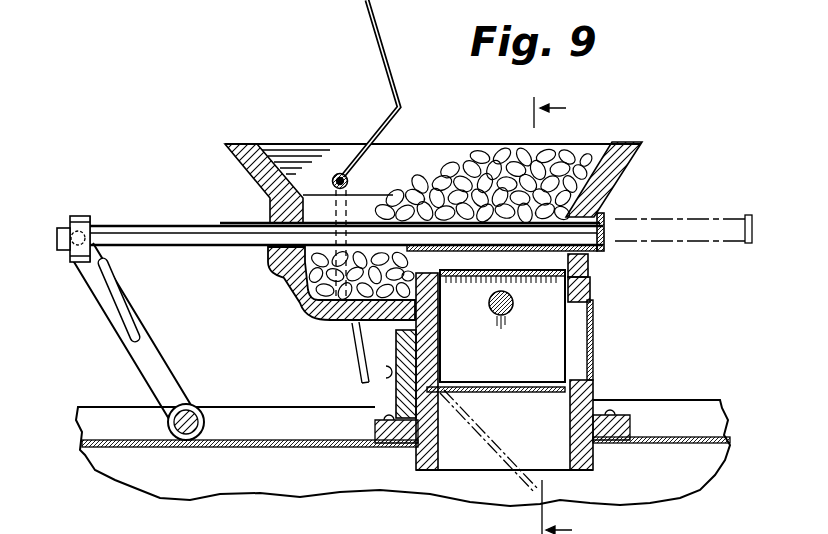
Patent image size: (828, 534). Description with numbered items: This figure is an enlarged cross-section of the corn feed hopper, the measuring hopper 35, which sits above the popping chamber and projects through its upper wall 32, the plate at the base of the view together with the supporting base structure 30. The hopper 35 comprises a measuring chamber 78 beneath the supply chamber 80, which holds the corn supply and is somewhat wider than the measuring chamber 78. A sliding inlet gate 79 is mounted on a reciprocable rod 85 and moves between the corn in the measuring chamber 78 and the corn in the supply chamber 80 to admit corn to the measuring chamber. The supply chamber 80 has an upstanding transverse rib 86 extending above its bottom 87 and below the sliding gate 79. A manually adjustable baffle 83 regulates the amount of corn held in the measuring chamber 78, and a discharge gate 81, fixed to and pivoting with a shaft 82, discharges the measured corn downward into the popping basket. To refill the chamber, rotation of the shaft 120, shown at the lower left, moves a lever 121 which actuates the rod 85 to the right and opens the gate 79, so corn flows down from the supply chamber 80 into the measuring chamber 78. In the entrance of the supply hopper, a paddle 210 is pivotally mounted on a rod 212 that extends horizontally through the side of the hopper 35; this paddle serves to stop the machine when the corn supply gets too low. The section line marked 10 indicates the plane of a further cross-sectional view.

The section line 10 is at (521, 315).
The base plate 30 is at (688, 403).
The upper wall 32 is at (656, 445).
The measuring hopper 35 is at (658, 152).
The measuring chamber 78 is at (525, 345).
The sliding inlet gate 79 is at (560, 256).
The supply chamber 80 is at (418, 166).
The discharge gate 81 is at (523, 392).
The shaft 82 is at (438, 418).
The manually adjustable baffle 83 is at (590, 280).
The reciprocable rod 85 is at (160, 226).
The upstanding transverse rib 86 is at (432, 262).
The bottom 87 is at (300, 297).
The shaft 120 is at (204, 422).
The lever 121 is at (160, 365).
The paddle 210 is at (382, 52).
The rod 212 is at (349, 179).